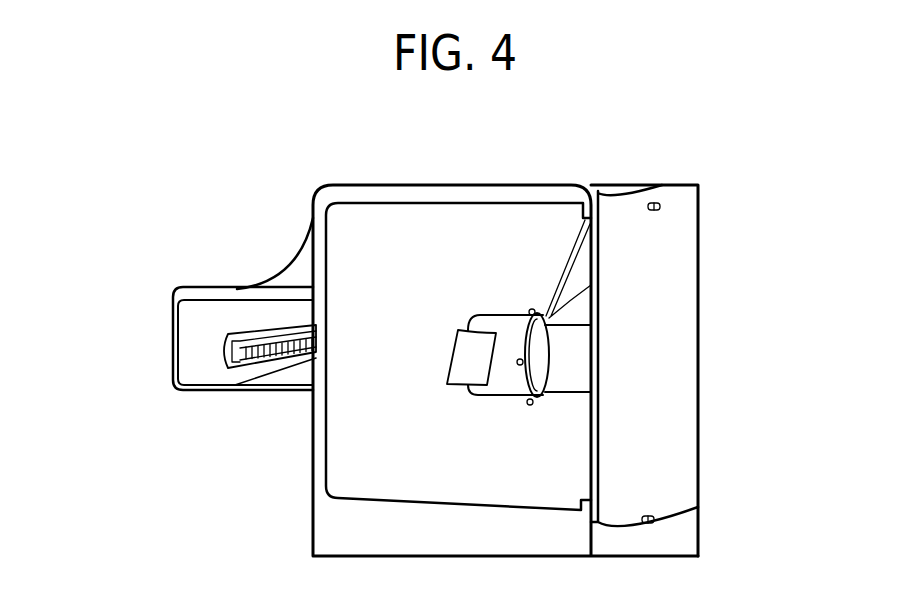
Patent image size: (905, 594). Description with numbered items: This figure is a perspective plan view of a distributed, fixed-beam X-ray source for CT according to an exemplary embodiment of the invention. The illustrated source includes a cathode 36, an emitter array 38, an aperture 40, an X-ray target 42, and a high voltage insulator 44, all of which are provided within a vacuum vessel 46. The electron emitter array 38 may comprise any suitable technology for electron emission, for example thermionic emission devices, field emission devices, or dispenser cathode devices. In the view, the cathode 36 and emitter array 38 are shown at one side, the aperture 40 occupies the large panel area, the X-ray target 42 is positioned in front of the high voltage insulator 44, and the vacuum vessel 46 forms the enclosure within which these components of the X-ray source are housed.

The cathode 36 is at (250, 328).
The emitter array 38 is at (230, 354).
The aperture 40 is at (367, 252).
The X-ray target 42 is at (456, 386).
The high voltage insulator 44 is at (590, 349).
The vacuum vessel 46 is at (648, 439).